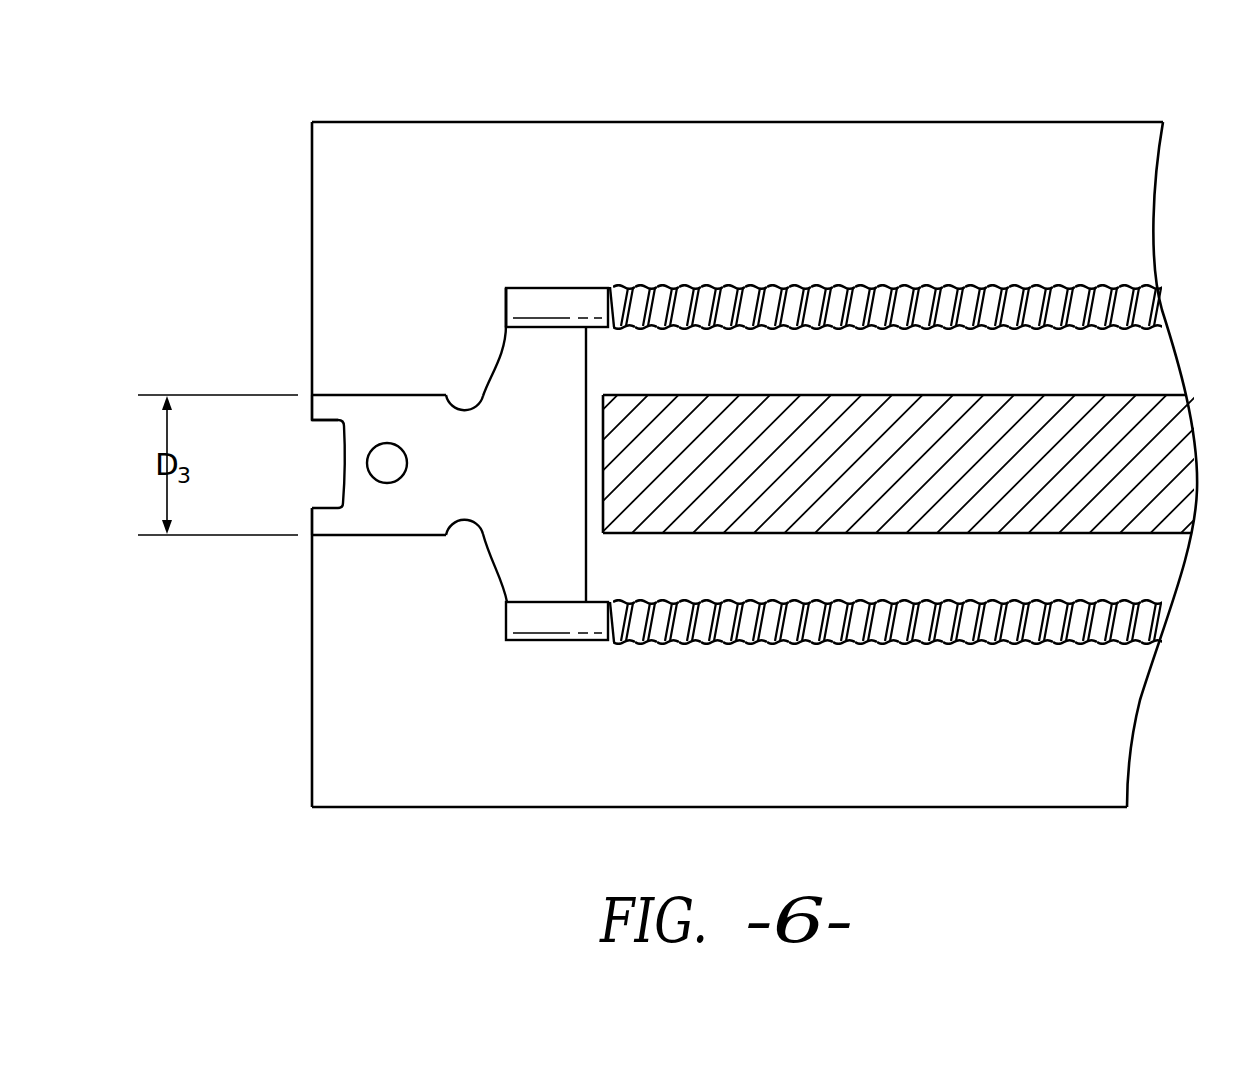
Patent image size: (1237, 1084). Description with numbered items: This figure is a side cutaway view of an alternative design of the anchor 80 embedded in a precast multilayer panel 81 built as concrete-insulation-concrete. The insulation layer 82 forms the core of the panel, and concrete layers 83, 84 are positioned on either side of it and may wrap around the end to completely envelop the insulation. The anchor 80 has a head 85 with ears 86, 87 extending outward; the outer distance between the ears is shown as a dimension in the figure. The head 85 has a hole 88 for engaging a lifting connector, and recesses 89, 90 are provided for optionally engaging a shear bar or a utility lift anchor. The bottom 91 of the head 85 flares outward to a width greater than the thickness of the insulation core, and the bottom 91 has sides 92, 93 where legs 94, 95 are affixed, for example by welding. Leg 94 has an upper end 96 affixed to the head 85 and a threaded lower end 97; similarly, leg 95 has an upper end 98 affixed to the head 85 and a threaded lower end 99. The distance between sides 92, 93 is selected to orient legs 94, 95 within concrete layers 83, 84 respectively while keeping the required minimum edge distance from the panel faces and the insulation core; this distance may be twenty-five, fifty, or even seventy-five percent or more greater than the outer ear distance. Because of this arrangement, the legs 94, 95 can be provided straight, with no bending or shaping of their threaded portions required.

The anchor 80 is at (330, 477).
The panel 81 is at (300, 181).
The insulation layer 82 is at (863, 447).
The concrete layer 83 is at (912, 757).
The concrete layer 84 is at (912, 172).
The head 85 is at (357, 438).
The ear 86 is at (305, 412).
The ear 87 is at (300, 522).
The hole 88 is at (387, 467).
The recess 89 is at (466, 410).
The recess 90 is at (462, 518).
The bottom 91 is at (532, 365).
The side 92 is at (536, 322).
The side 93 is at (535, 602).
The leg 94 is at (705, 308).
The leg 95 is at (707, 625).
The upper end 96 is at (573, 303).
The lower end 97 is at (1060, 310).
The upper end 98 is at (563, 620).
The lower end 99 is at (1060, 620).